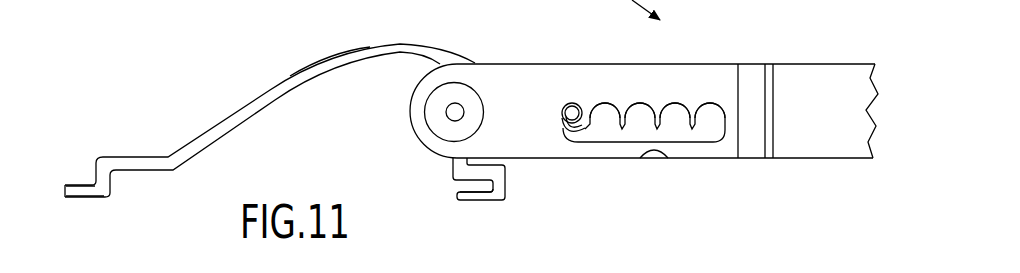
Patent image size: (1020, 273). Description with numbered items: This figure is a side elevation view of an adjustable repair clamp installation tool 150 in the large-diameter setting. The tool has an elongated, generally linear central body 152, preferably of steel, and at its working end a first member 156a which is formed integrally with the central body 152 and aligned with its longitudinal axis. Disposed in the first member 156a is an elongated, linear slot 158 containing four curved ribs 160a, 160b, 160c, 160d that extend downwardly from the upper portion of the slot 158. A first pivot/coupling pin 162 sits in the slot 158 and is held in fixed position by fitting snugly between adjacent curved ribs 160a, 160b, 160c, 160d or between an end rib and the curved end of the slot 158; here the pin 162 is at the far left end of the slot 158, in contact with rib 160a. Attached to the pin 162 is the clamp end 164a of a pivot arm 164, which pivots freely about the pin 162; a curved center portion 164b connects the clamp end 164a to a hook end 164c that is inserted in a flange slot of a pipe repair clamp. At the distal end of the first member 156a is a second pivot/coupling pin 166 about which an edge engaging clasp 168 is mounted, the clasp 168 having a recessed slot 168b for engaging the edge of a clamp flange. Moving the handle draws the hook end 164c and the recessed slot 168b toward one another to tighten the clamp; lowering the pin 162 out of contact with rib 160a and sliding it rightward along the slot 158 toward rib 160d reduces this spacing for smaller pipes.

The adjustable repair clamp installation tool 150 is at (248, 63).
The central body 152 is at (750, 62).
The first member 156a is at (543, 127).
The elongated linear slot 158 is at (650, 162).
The curved rib 160a is at (592, 122).
The curved rib 160b is at (625, 122).
The curved rib 160c is at (660, 122).
The curved rib 160d is at (697, 122).
The first pivot/coupling pin 162 is at (572, 103).
The pivot arm 164 is at (265, 93).
The clamp end 164a is at (567, 133).
The curved center portion 164b is at (322, 66).
The hook end 164c is at (78, 184).
The second pivot/coupling pin 166 is at (457, 110).
The edge engaging clasp 168 is at (452, 167).
The recessed slot 168b is at (487, 183).